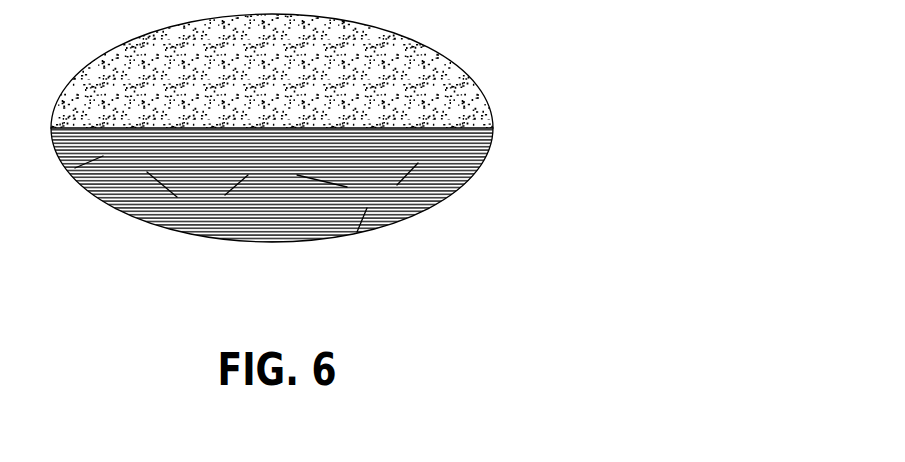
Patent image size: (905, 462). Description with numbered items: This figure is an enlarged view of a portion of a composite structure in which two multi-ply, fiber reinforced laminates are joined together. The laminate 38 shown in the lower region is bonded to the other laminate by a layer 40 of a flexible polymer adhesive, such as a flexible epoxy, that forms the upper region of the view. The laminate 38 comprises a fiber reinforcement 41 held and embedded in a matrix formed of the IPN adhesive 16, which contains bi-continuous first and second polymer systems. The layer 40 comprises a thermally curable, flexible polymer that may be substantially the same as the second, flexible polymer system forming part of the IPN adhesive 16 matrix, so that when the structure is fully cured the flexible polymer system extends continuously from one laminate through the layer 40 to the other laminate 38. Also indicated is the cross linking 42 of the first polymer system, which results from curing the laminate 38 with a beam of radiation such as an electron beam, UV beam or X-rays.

The IPN adhesive 16 is at (397, 210).
The laminate 38 is at (120, 192).
The layer 40 is at (465, 110).
The fiber reinforcement 41 is at (253, 223).
The cross linking 42 is at (150, 172).